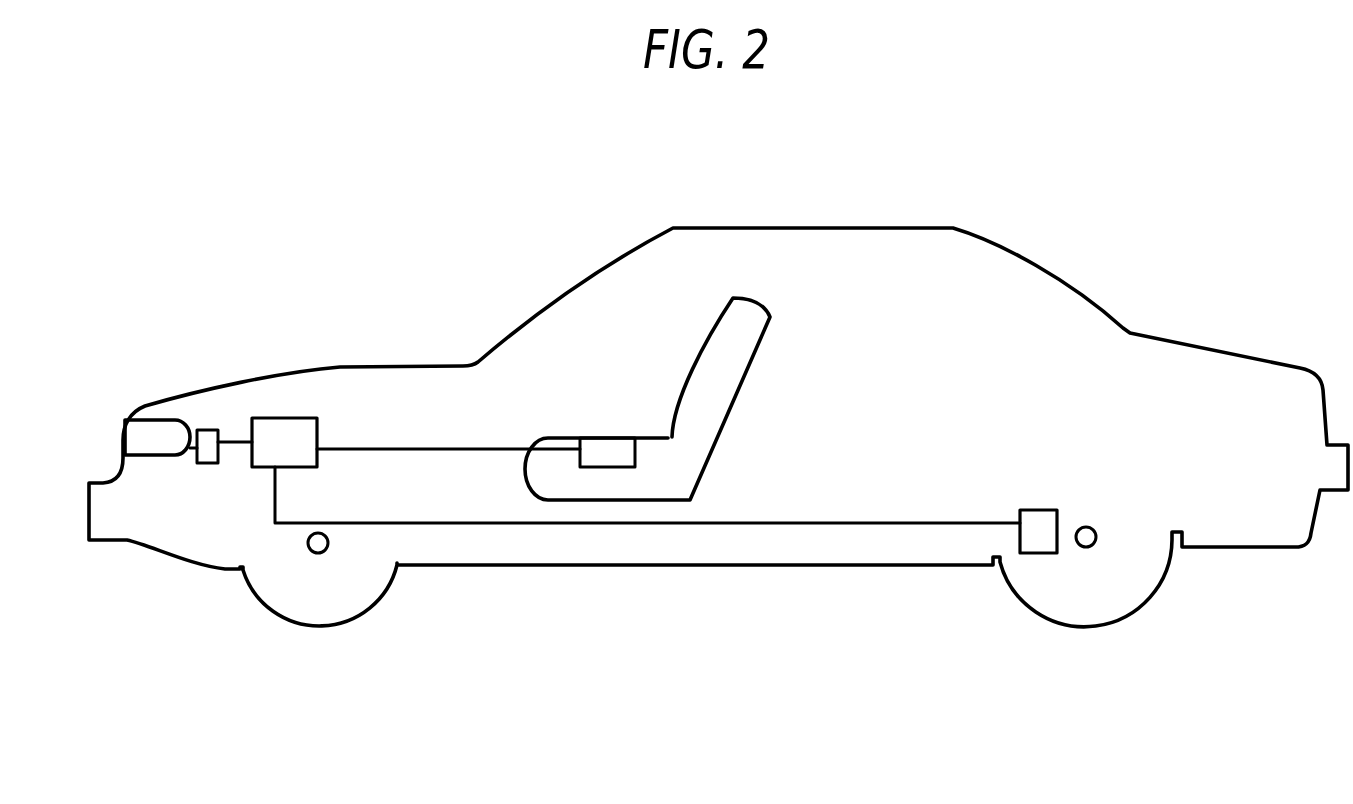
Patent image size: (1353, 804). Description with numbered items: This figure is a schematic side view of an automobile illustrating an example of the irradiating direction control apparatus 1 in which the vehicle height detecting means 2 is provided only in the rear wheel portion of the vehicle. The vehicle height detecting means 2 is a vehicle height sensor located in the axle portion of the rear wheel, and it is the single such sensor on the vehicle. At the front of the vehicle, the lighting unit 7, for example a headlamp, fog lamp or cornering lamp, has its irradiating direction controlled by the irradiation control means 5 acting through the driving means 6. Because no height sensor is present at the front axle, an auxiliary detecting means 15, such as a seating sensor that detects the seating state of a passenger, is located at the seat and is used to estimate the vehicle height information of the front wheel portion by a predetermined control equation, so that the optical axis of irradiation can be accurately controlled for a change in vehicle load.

The irradiating direction control apparatus 1 is at (242, 267).
The vehicle height detecting means 2 is at (1037, 553).
The irradiation control means 5 is at (280, 418).
The driving means 6 is at (207, 430).
The lighting unit 7 is at (123, 437).
The auxiliary detecting means 15 is at (605, 435).